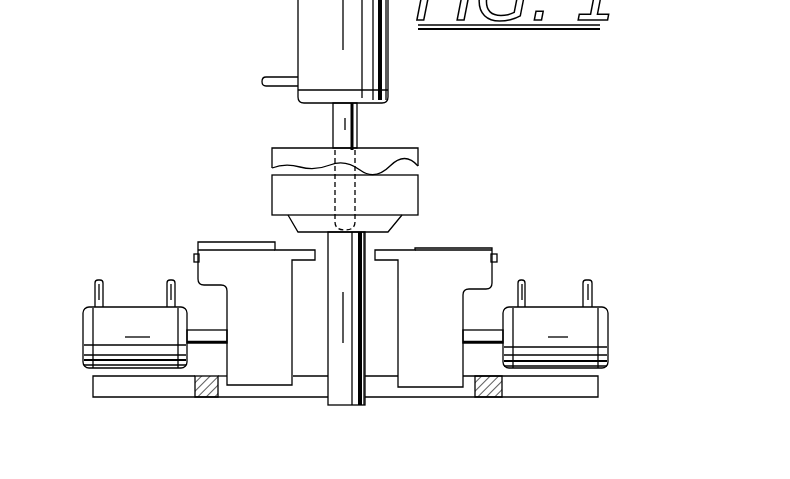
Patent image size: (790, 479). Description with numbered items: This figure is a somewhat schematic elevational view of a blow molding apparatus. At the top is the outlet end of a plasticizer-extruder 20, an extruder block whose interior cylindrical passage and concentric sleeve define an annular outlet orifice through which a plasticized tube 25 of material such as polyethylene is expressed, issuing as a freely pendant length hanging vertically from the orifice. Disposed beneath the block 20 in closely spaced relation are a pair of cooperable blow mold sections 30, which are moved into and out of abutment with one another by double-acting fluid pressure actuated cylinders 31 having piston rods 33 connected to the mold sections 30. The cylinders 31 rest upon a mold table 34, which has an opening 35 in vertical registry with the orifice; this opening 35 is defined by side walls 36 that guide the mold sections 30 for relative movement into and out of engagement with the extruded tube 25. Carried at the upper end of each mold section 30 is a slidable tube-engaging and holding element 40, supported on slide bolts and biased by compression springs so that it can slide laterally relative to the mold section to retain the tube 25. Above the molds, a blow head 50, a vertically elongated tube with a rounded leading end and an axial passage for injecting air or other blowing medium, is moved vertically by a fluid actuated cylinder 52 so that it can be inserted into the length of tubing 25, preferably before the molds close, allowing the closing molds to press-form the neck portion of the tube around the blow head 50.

The outlet end of a plasticizer-extruder 20 is at (426, 182).
The plasticized tube 25 is at (373, 242).
The blow mold sections 30 is at (188, 267).
The fluid pressure actuated cylinders 31 is at (105, 325).
The piston rods 33 is at (208, 338).
The mold table 34 is at (547, 387).
The opening 35 is at (467, 390).
The side walls 36 is at (378, 388).
The tube-engaging and holding element 40 is at (297, 247).
The blow head 50 is at (331, 118).
The fluid actuated cylinder 52 is at (325, 6).